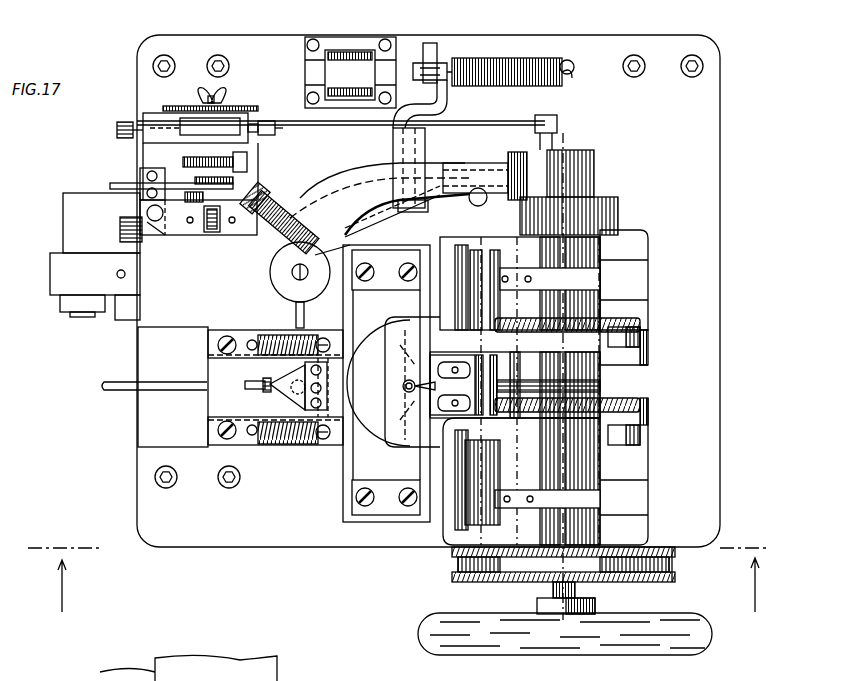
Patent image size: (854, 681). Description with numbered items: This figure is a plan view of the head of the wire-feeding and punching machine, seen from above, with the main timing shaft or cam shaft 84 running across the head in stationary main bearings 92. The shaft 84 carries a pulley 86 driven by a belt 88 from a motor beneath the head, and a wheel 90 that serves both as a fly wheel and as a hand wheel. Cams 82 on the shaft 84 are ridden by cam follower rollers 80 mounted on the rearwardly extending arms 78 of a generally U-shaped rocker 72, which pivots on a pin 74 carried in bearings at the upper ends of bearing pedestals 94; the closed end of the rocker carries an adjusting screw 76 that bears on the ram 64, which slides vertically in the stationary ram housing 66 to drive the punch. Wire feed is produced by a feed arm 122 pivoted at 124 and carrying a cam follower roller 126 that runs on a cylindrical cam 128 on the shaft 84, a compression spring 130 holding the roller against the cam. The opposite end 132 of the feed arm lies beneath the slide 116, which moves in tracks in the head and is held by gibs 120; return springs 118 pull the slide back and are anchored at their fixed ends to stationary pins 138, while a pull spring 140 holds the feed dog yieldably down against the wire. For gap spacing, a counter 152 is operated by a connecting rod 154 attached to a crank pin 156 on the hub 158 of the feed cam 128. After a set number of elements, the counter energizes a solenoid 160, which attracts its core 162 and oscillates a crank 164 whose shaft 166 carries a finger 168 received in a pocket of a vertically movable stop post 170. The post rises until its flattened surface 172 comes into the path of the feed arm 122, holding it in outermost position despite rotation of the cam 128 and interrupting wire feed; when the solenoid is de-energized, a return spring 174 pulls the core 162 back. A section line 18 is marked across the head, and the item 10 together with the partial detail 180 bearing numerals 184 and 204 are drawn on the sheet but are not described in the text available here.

The rod 10 is at (118, 390).
The section line 18 is at (399, 580).
The ram 64 is at (400, 364).
The ram housing 66 is at (352, 470).
The rocker 72 is at (432, 432).
The pin 74 is at (483, 495).
The adjusting screw 76 is at (400, 392).
The arms 78 is at (648, 358).
The cam follower rollers 80 is at (642, 334).
The cams 82 is at (585, 320).
The main timing shaft 84 is at (580, 150).
The pulley 86 is at (664, 582).
The belt 88 is at (455, 564).
The wheel 90 is at (712, 624).
The main bearings 92 is at (603, 238).
The bearing pedestals 94 is at (630, 272).
The slide 116 is at (215, 400).
The springs 118 is at (270, 334).
The gibs 120 is at (232, 336).
The feed arm 122 is at (345, 172).
The pivot 124 is at (270, 266).
The cam follower roller 126 is at (514, 152).
The cylindrical cam 128 is at (618, 206).
The compression spring 130 is at (290, 203).
The end of the feed arm 132 is at (276, 445).
The stationary pins 138 is at (252, 428).
The pull spring 140 is at (250, 348).
The counter 152 is at (160, 160).
The connecting rod 154 is at (476, 121).
The crank pin 156 is at (558, 133).
The hub 158 is at (596, 162).
The solenoid 160 is at (308, 47).
The solenoid core 162 is at (402, 63).
The crank 164 is at (440, 100).
The shaft 166 is at (403, 148).
The finger 168 is at (447, 198).
The stop post 170 is at (478, 205).
The flattened surface 172 is at (475, 167).
The return spring 174 is at (490, 58).
The box 180 is at (232, 660).
The element 184 is at (214, 673).
The element 204 is at (176, 673).